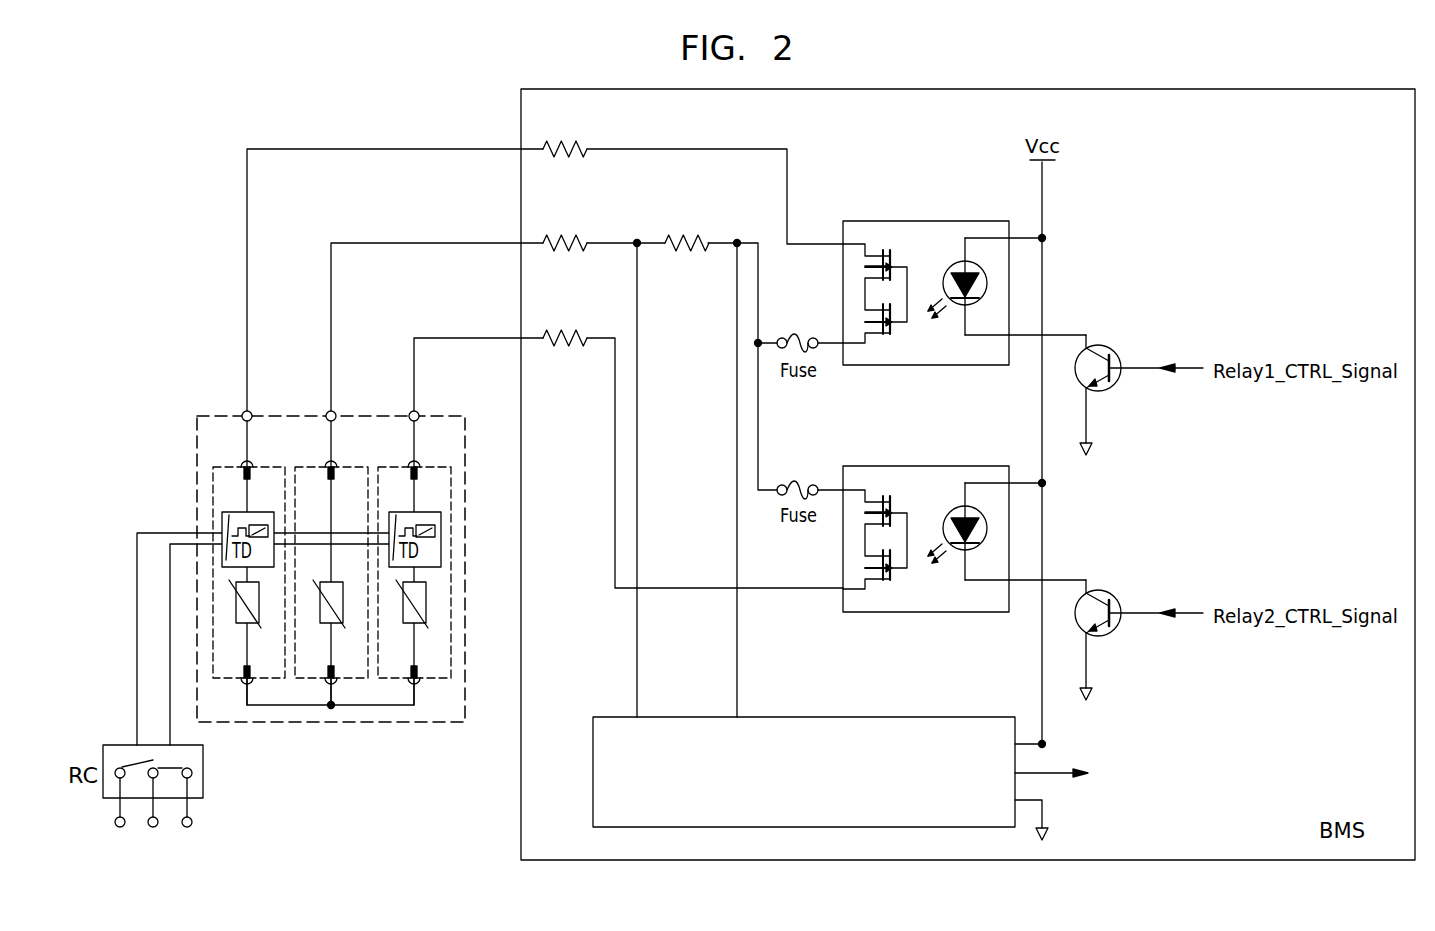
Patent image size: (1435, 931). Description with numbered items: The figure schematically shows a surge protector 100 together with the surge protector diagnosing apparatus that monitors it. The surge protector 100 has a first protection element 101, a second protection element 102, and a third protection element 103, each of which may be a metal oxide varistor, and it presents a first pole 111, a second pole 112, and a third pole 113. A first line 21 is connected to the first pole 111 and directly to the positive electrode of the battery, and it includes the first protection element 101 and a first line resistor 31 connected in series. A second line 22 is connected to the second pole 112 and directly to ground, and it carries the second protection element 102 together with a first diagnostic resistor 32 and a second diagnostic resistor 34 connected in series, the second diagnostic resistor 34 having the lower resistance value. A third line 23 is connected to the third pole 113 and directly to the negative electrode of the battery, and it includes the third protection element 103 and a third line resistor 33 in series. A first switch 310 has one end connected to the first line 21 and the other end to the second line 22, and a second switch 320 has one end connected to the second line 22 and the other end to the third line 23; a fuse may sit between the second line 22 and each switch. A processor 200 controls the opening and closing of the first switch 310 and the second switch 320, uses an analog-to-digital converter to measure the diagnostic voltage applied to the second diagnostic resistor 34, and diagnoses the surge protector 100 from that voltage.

The first line 21 is at (377, 150).
The second line 22 is at (448, 245).
The third line 23 is at (490, 340).
The first line resistor 31 is at (562, 136).
The first diagnostic resistor 32 is at (570, 228).
The third line resistor 33 is at (570, 326).
The second diagnostic resistor 34 is at (690, 226).
The surge protector 100 is at (304, 566).
The first protection element 101 is at (253, 625).
The second protection element 102 is at (334, 625).
The third protection element 103 is at (417, 625).
The first pole 111 is at (258, 411).
The second pole 112 is at (341, 411).
The third pole 113 is at (425, 411).
The processor 200 is at (862, 713).
The first switch 310 is at (933, 219).
The second switch 320 is at (933, 464).